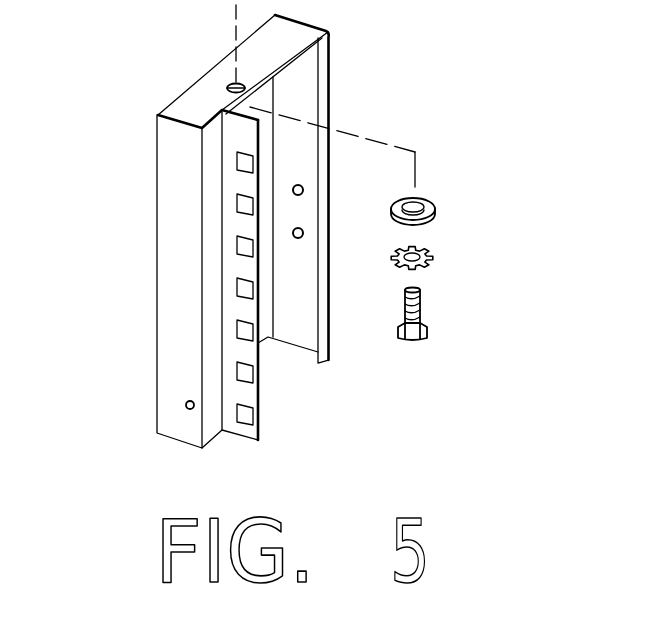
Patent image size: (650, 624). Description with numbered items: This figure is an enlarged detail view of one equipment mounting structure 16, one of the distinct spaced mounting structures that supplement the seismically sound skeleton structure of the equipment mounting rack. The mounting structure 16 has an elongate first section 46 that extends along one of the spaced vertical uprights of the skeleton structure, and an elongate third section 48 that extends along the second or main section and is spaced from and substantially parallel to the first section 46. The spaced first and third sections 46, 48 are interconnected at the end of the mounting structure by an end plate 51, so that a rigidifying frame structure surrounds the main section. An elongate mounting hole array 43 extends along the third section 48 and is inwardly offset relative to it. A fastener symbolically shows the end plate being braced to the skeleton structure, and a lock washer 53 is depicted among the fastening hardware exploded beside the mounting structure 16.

The equipment mounting structure 16 is at (265, 226).
The elongate mounting hole array 43 is at (243, 418).
The elongate first section 46 is at (300, 85).
The elongate third section 48 is at (183, 322).
The end plate 51 is at (212, 93).
The lock washer 53 is at (432, 260).